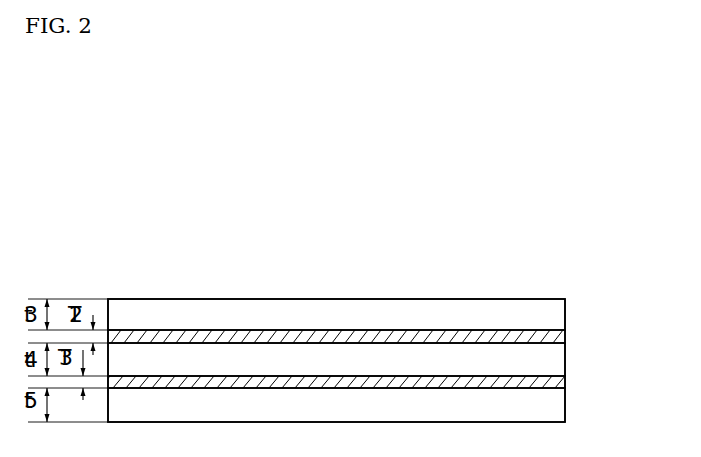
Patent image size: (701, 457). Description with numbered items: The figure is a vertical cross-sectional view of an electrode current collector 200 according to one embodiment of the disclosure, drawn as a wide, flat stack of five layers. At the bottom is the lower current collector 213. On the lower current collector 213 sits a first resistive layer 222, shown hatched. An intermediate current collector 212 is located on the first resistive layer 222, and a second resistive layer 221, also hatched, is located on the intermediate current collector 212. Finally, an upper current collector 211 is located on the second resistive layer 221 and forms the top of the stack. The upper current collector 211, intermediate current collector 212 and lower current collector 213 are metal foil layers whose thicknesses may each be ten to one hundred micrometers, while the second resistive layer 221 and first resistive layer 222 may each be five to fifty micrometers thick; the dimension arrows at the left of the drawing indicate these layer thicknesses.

The electrode current collector 200 is at (293, 217).
The upper current collector 211 is at (557, 307).
The second resistive layer 221 is at (557, 335).
The intermediate current collector 212 is at (557, 360).
The first resistive layer 222 is at (557, 383).
The lower current collector 213 is at (557, 413).